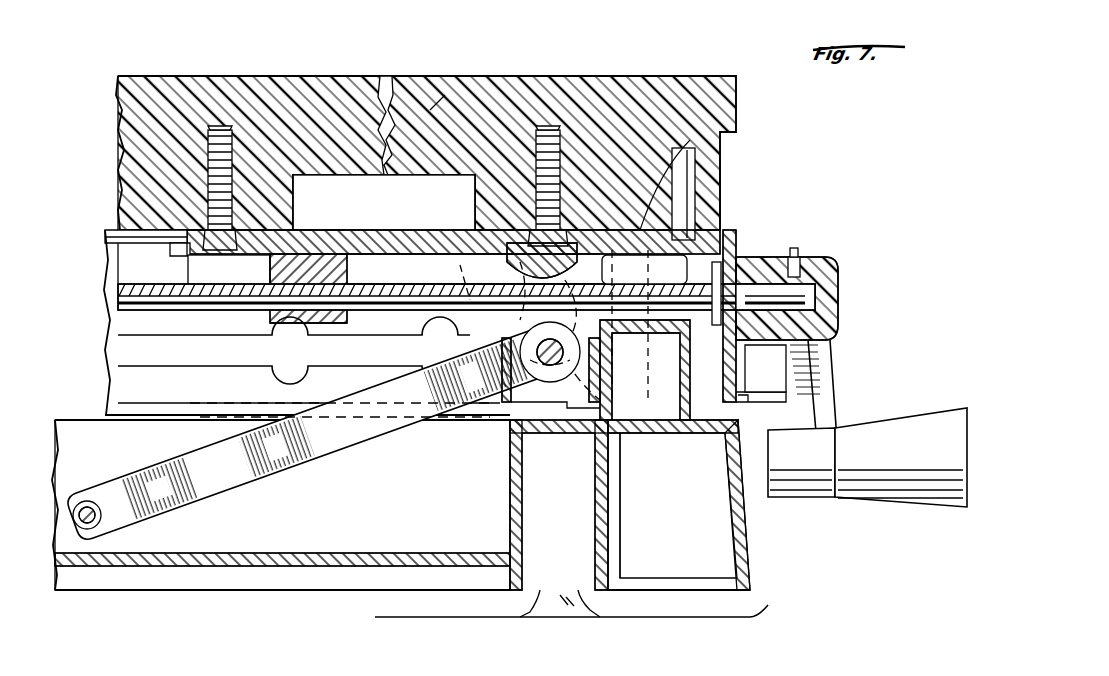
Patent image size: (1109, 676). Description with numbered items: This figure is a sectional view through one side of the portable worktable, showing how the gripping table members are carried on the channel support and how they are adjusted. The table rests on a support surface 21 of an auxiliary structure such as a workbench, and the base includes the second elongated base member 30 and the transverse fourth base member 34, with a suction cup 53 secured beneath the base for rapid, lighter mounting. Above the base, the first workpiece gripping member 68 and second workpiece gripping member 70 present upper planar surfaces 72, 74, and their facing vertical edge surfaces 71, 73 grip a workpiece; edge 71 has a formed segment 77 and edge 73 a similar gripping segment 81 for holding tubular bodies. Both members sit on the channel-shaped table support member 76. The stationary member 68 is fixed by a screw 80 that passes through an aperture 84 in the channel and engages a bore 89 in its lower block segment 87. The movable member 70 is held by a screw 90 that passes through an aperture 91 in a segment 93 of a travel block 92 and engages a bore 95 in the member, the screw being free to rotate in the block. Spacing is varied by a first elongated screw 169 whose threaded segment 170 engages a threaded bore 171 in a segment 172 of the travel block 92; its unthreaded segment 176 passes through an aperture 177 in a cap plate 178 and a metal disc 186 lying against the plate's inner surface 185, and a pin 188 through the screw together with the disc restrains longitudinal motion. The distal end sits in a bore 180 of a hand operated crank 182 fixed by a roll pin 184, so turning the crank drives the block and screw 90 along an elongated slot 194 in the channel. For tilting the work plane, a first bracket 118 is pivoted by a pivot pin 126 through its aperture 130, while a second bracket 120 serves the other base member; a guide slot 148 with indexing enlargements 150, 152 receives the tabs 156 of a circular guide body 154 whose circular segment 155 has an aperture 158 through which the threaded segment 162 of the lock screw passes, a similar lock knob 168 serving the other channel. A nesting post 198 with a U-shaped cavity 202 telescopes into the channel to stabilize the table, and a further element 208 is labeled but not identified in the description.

The support surface 21 is at (775, 607).
The second elongated base member 30 is at (335, 575).
The fourth elongated base member 34 is at (752, 530).
The suction cup 53 is at (558, 625).
The first workpiece gripping member 68 is at (672, 85).
The second workpiece gripping member 70 is at (180, 85).
The vertical edge surface 71 is at (384, 202).
The upper planar surface 72 is at (560, 78).
The vertical edge surface 73 is at (387, 78).
The upper planar surface 74 is at (275, 78).
The table support member 76 is at (100, 248).
The formed segment 77 is at (320, 202).
The screw 80 is at (532, 261).
The gripping segment 81 is at (420, 90).
The aperture 84 is at (557, 291).
The lower block segment 87 is at (722, 193).
The bore 89 is at (470, 200).
The screw 90 is at (160, 258).
The aperture 91 is at (192, 255).
The travel block 92 is at (312, 235).
The segment 93 is at (260, 262).
The bore 95 is at (200, 145).
The first bracket 118 is at (250, 478).
The second bracket 120 is at (281, 505).
The pivot pin 126 is at (87, 500).
The aperture 130 is at (98, 520).
The guide slot 148 is at (168, 362).
The indexing enlargement 150 is at (458, 338).
The indexing enlargement 152 is at (290, 360).
The circular guide body 154 is at (548, 410).
The circular-shaped segment 155 is at (537, 264).
The tabs 156 is at (505, 325).
The aperture 158 is at (644, 269).
The threaded segment 162 is at (538, 370).
The lock knob 168 is at (464, 274).
The first elongated screw 169 is at (378, 290).
The threaded segment 170 is at (360, 318).
The threaded bore 171 is at (345, 272).
The segment 172 is at (315, 330).
The unthreaded segment 176 is at (645, 335).
The aperture 177 is at (794, 256).
The cap plate 178 is at (740, 248).
The bore 180 is at (761, 368).
The hand operated crank 182 is at (840, 335).
The roll pin 184 is at (796, 268).
The inner surface 185 is at (748, 403).
The metal disc 186 is at (673, 420).
The pin 188 is at (728, 262).
The elongated slot 194 is at (110, 235).
The nesting post 198 is at (696, 168).
The U-shaped cavity 202 is at (660, 400).
The bore 208 is at (700, 118).